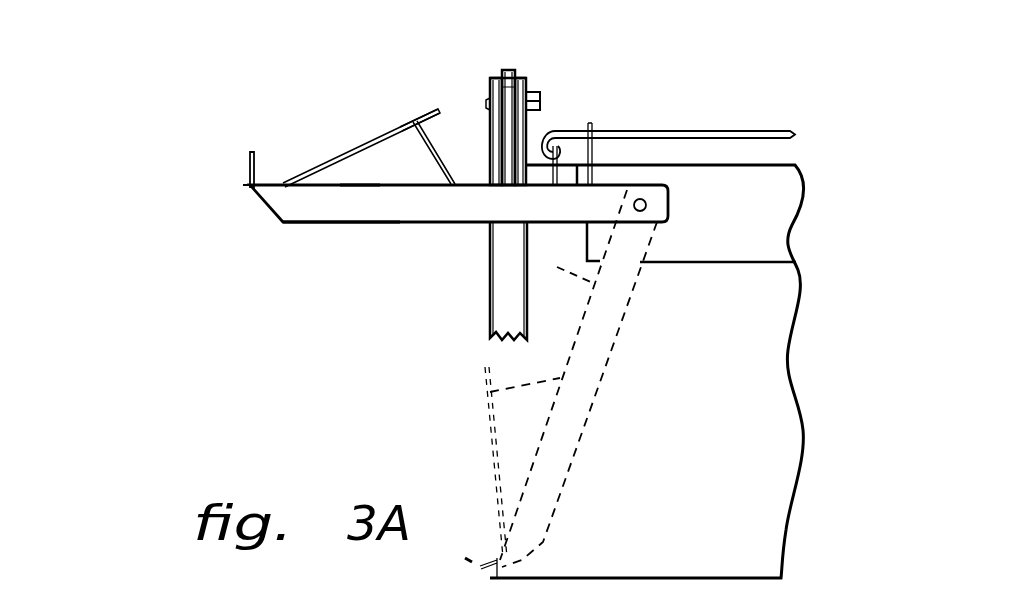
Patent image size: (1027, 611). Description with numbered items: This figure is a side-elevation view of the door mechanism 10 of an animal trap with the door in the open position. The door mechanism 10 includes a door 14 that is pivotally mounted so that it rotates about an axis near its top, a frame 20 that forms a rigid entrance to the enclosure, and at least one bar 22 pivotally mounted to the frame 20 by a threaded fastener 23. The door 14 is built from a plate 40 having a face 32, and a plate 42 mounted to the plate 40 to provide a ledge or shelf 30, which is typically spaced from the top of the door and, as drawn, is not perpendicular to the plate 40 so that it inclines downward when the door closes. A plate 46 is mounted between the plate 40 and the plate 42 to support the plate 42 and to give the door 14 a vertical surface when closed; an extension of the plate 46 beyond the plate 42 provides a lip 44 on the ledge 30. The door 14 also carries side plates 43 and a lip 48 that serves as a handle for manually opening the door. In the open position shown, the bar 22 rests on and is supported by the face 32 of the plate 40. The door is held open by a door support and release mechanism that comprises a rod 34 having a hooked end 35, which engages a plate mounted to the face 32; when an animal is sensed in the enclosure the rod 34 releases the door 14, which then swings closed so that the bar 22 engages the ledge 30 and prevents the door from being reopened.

The door mechanism 10 is at (140, 102).
The door 14 is at (307, 224).
The frame 20 is at (527, 74).
The bar 22 is at (508, 70).
The threaded fastener 23 is at (490, 102).
The ledge or shelf 30 is at (466, 165).
The face 32 is at (470, 188).
The rod 34 is at (684, 132).
The hooked end 35 is at (546, 132).
The plate 40 is at (412, 188).
The plate 42 is at (426, 147).
The side plate 43 is at (365, 202).
The lip 44 is at (432, 110).
The plate 46 is at (378, 133).
The lip 48 is at (248, 163).